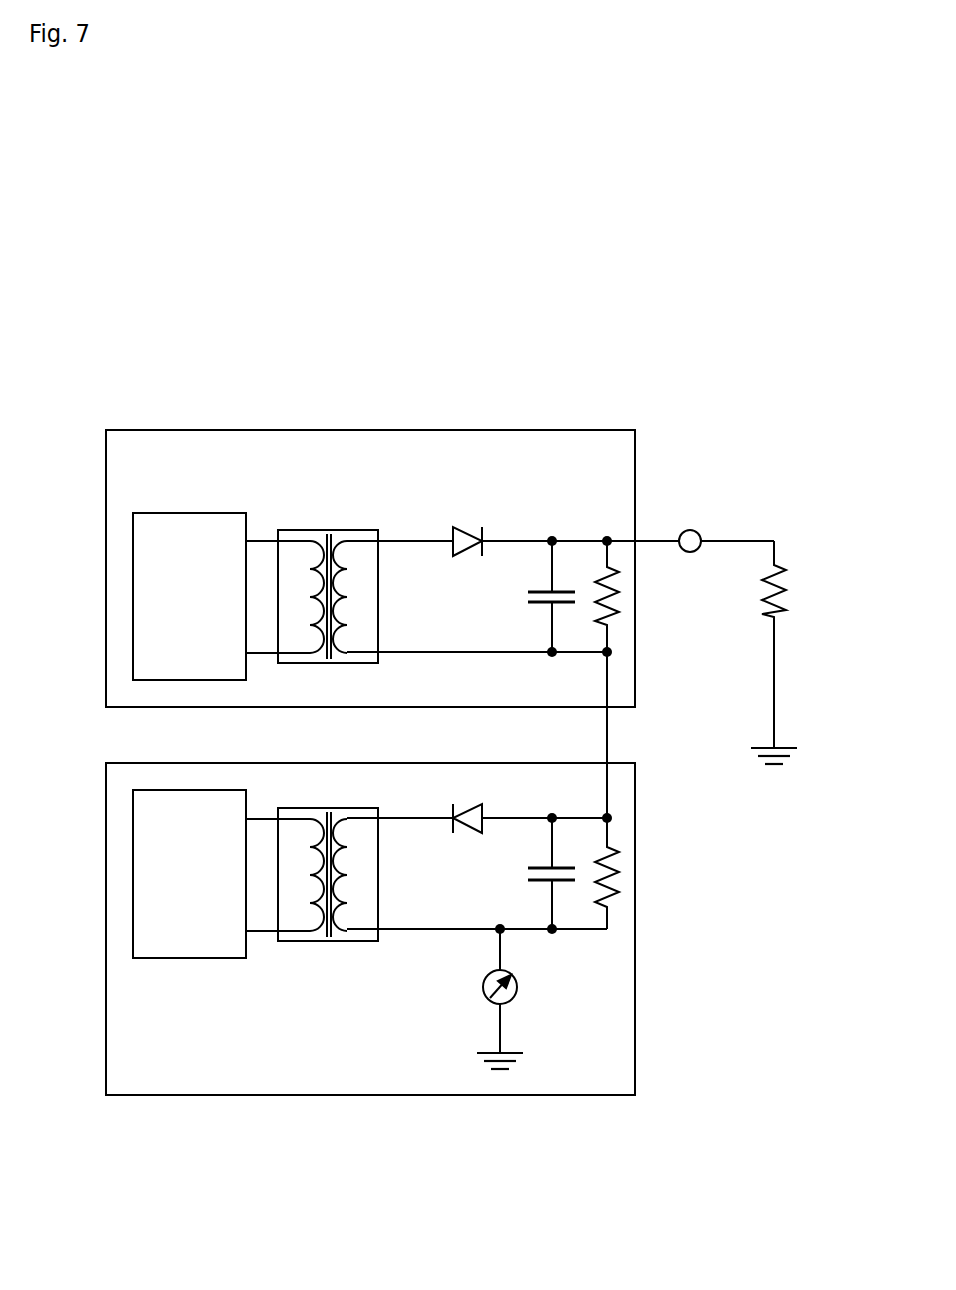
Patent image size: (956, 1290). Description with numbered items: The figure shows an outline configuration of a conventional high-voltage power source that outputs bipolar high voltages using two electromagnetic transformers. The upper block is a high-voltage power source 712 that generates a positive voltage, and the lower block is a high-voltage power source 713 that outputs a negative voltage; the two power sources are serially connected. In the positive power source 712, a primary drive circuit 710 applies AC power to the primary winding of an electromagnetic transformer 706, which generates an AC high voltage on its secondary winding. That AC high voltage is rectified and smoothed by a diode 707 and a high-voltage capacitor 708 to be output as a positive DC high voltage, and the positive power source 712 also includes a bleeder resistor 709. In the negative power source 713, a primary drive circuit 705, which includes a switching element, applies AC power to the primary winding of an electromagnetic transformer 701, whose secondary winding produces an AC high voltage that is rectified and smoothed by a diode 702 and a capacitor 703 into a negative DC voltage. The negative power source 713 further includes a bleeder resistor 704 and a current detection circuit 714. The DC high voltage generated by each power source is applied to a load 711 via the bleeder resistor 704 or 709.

The electromagnetic transformer 701 is at (326, 945).
The diode 702 is at (468, 831).
The capacitor 703 is at (537, 881).
The bleeder resistor 704 is at (615, 883).
The primary drive circuit 705 is at (186, 960).
The electromagnetic transformer 706 is at (324, 529).
The diode 707 is at (461, 527).
The high-voltage capacitor 708 is at (527, 595).
The bleeder resistor 709 is at (617, 590).
The primary drive circuit 710 is at (184, 512).
The load 711 is at (787, 583).
The high-voltage power source 712 is at (407, 428).
The high-voltage power source 713 is at (372, 1097).
The current detection circuit 714 is at (481, 990).